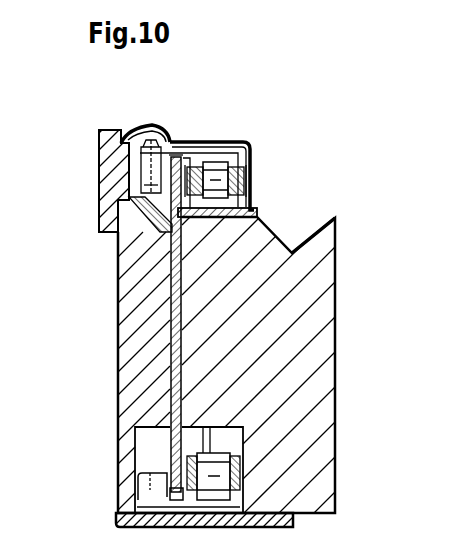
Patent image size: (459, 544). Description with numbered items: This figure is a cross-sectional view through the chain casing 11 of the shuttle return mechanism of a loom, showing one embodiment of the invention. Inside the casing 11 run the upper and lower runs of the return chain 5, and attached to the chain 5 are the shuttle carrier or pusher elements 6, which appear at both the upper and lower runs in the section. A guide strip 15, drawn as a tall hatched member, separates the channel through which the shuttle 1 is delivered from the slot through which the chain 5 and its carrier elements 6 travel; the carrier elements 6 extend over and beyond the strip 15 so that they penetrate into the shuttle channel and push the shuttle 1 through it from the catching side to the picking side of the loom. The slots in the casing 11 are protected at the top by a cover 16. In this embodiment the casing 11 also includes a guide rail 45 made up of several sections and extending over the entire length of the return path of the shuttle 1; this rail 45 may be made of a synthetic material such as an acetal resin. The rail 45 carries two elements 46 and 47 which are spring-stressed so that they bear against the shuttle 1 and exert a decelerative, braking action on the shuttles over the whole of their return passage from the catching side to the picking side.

The shuttle 1 is at (150, 131).
The chain 5 is at (222, 181).
The carrier element 6 is at (192, 158).
The casing 11 is at (328, 336).
The guide strip 15 is at (182, 383).
The cover 16 is at (235, 143).
The guide rail 45 is at (118, 247).
The spring-stressed element 46 is at (138, 173).
The spring-stressed element 47 is at (178, 158).